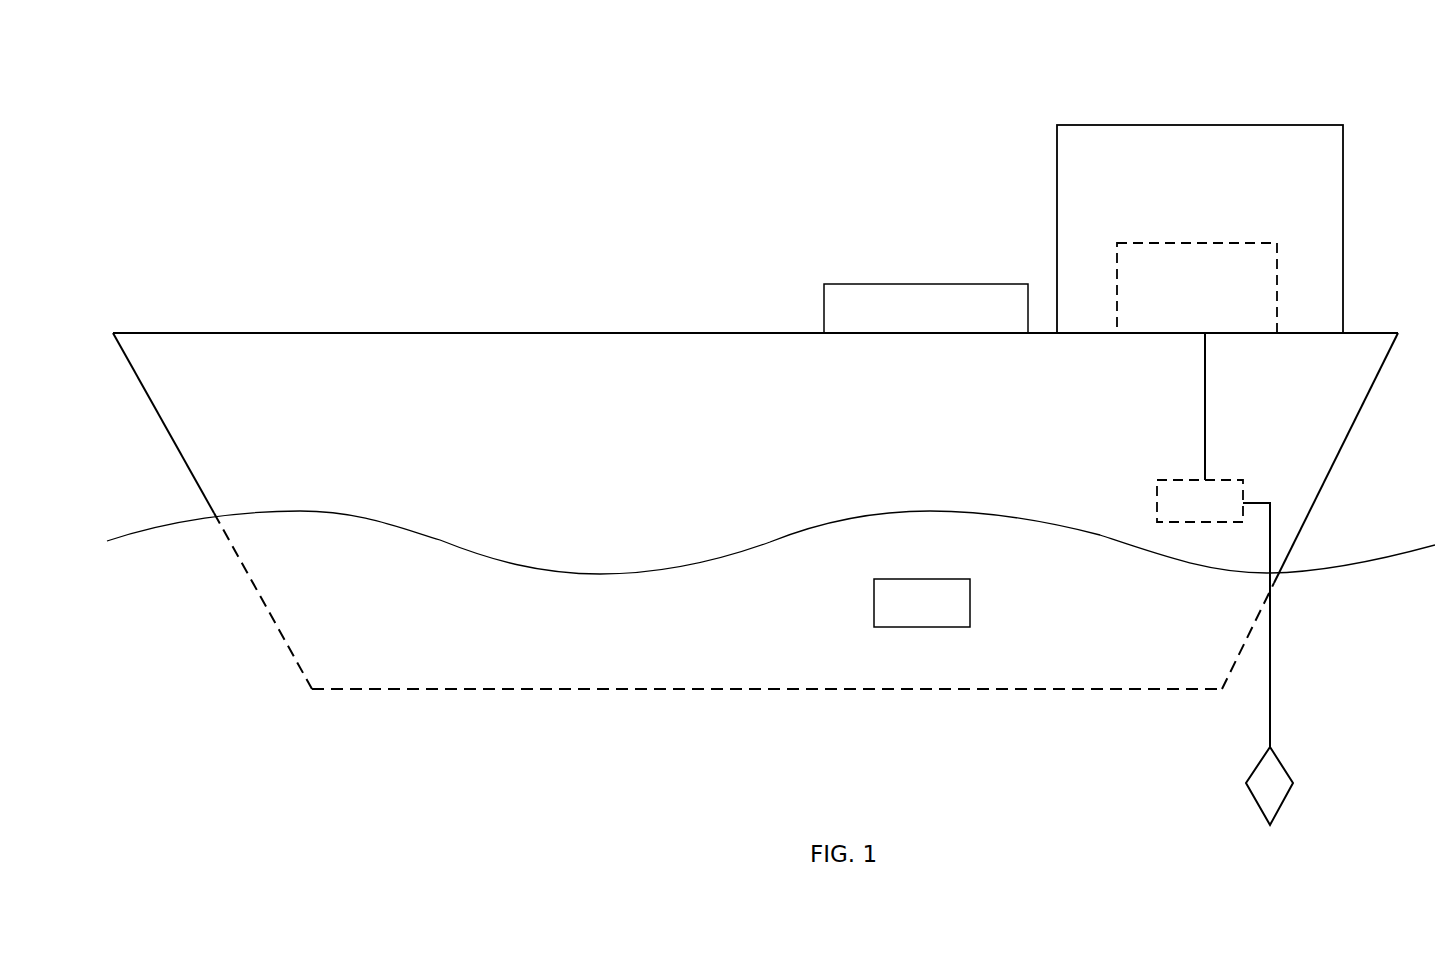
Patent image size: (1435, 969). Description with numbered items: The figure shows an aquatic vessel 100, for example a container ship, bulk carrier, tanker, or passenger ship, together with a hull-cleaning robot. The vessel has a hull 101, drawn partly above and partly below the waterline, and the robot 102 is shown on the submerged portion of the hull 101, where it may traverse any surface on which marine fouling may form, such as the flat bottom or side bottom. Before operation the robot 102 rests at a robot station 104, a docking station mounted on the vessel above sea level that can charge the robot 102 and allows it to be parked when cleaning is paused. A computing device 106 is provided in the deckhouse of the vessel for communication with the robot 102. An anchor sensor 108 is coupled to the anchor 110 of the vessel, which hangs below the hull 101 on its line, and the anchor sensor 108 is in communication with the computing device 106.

The aquatic vessel 100 is at (183, 94).
The hull 101 is at (785, 467).
The robot 102 is at (922, 627).
The robot station 104 is at (926, 284).
The computing device 106 is at (1193, 243).
The anchor sensor 108 is at (1173, 478).
The anchor 110 is at (1283, 805).